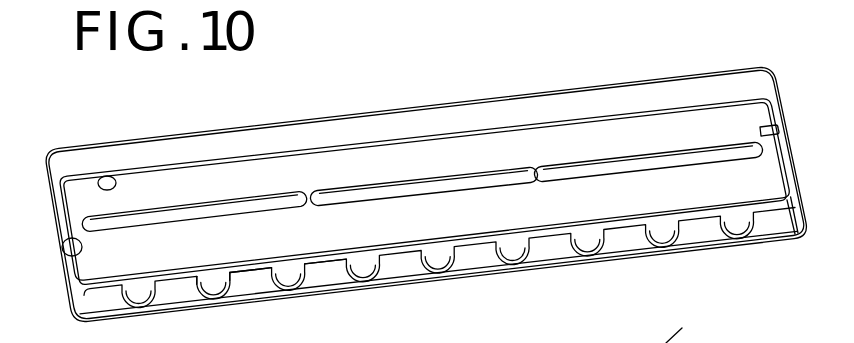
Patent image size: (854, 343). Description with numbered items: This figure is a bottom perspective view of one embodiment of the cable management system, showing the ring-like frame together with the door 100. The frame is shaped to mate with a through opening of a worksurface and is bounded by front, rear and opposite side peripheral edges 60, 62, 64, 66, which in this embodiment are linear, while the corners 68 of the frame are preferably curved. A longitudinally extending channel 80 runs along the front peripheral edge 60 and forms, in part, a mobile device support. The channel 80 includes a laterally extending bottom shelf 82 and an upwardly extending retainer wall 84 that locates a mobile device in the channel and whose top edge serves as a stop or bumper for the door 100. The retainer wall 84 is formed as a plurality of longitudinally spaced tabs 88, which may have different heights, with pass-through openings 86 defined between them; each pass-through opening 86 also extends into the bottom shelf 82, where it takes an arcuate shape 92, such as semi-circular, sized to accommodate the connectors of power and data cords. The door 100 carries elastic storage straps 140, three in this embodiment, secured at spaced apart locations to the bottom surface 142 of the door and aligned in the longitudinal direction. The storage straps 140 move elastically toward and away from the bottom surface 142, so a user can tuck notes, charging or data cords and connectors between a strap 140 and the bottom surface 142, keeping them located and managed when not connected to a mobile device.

The front peripheral edge 60 is at (478, 272).
The rear peripheral edge 62 is at (108, 177).
The side peripheral edge 64 is at (785, 126).
The side peripheral edge 66 is at (63, 248).
The corners 68 is at (602, 333).
The channel 80 is at (548, 252).
The bottom shelf 82 is at (256, 289).
The retainer wall 84 is at (338, 274).
The pass-through openings 86 is at (224, 288).
The tabs 88 is at (86, 294).
The arcuate shape 92 is at (260, 308).
The door 100 is at (241, 255).
The elastic storage straps 140 is at (174, 213).
The bottom surface 142 is at (383, 233).